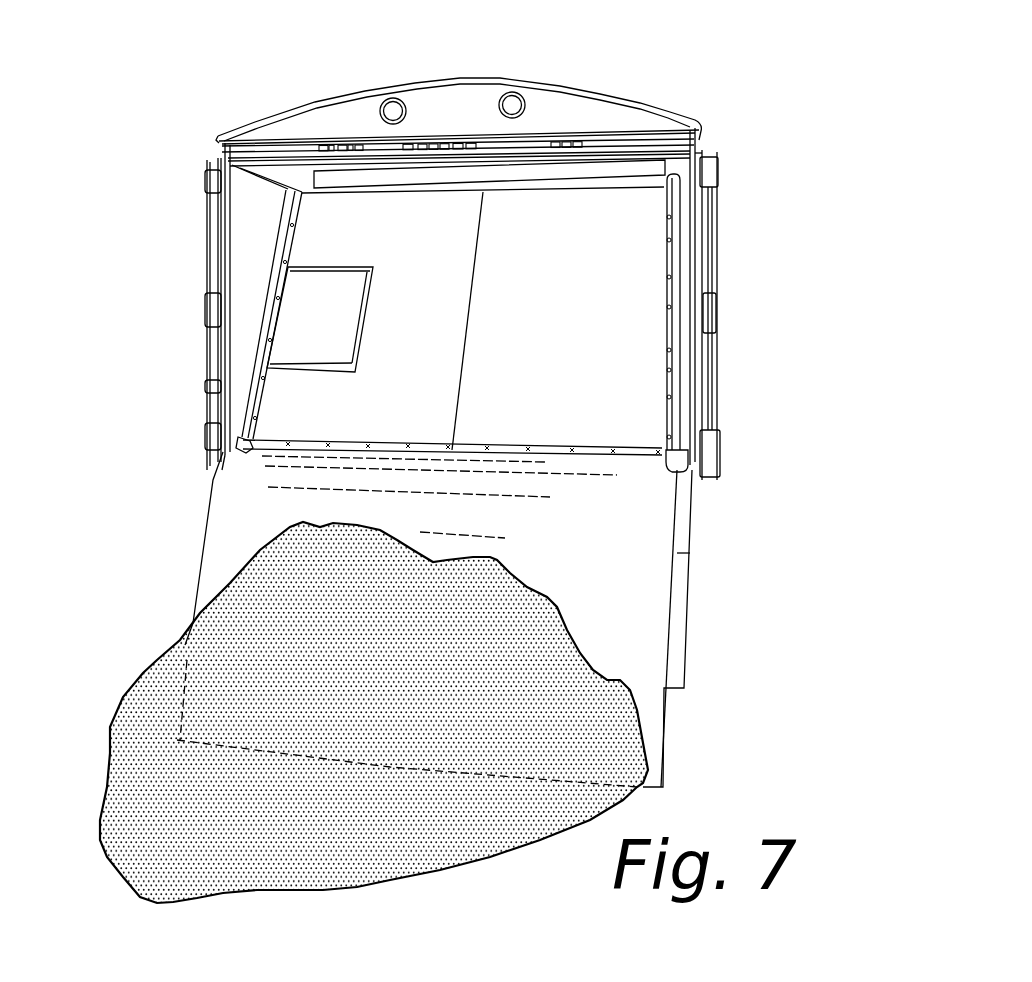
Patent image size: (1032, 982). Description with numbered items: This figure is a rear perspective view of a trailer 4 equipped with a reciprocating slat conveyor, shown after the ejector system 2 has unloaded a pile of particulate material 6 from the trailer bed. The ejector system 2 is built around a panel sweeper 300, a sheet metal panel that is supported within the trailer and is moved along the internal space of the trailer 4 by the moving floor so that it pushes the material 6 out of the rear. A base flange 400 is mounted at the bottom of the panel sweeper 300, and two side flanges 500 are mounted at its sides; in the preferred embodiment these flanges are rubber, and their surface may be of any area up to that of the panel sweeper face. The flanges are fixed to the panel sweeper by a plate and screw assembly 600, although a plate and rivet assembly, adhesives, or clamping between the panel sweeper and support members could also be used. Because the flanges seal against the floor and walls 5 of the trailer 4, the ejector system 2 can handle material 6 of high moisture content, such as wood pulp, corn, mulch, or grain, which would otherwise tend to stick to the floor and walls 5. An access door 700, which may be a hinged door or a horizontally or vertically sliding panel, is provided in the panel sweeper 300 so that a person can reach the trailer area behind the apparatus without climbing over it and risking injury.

The ejector system 2 is at (133, 332).
The trailer 4 is at (687, 117).
The walls 5 is at (267, 222).
The material 6 is at (160, 695).
The panel sweeper 300 is at (552, 287).
The base flange 400 is at (640, 564).
The side flanges 500 is at (258, 323).
The plate and screw assembly 600 is at (640, 447).
The access door 700 is at (343, 315).